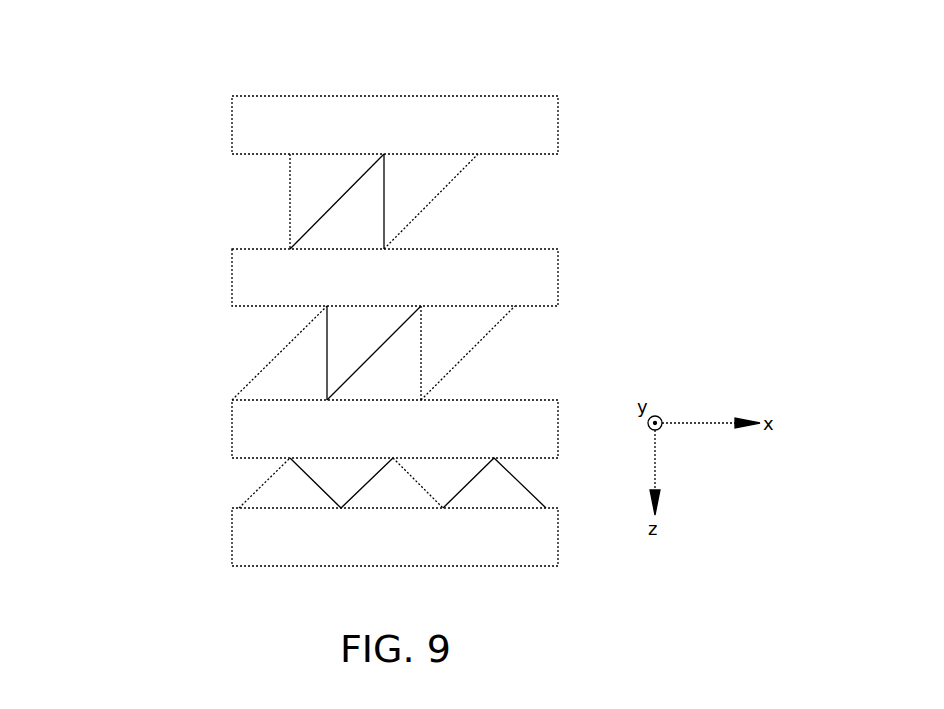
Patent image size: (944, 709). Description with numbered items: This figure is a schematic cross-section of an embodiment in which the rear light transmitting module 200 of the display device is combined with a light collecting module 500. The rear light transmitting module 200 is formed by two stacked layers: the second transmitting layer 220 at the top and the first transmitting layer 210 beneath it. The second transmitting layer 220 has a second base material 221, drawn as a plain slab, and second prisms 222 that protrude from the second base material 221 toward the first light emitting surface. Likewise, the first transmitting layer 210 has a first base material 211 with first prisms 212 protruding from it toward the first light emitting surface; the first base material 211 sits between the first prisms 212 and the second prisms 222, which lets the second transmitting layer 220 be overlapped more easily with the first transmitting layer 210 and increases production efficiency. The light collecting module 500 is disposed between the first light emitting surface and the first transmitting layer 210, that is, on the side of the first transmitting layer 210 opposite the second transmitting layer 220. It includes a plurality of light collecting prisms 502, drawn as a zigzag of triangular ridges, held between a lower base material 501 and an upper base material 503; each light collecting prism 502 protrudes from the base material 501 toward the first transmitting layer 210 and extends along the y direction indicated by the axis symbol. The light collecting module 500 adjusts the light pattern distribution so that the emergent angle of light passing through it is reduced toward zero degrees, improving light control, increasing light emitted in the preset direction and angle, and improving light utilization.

The rear light transmitting module 200 is at (200, 72).
The first transmitting layer 210 is at (620, 308).
The first base material 211 is at (548, 291).
The first prisms 212 is at (465, 345).
The second transmitting layer 220 is at (620, 155).
The second base material 221 is at (548, 138).
The second prisms 222 is at (430, 189).
The light collecting module 500 is at (118, 412).
The base material 501 is at (240, 538).
The light collecting prisms 502 is at (257, 488).
The base material 503 is at (240, 432).